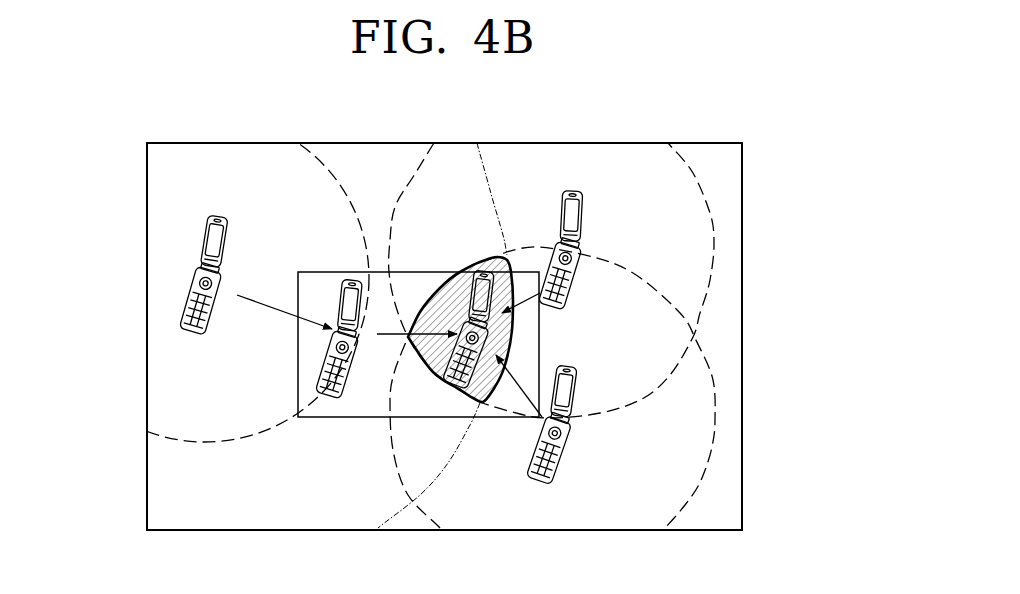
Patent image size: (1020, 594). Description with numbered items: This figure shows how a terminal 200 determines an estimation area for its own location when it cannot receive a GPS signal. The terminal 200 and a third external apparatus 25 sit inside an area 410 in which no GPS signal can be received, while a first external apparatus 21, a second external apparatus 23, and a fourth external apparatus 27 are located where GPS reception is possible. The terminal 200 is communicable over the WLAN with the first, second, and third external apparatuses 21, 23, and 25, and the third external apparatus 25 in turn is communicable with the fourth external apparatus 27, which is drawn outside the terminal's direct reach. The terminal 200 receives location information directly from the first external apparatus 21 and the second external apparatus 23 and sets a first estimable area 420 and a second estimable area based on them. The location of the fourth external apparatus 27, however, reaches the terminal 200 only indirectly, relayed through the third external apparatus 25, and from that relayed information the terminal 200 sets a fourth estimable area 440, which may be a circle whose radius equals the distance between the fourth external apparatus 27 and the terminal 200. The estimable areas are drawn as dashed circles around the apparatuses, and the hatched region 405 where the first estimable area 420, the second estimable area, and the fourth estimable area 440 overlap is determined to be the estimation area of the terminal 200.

The first external apparatus 21 is at (577, 273).
The second external apparatus 23 is at (570, 453).
The third external apparatus 25 is at (332, 278).
The fourth external apparatus 27 is at (200, 245).
The terminal 200 is at (527, 333).
The estimated location region 405 is at (423, 385).
The area in which it is not possible to receive a GPS signal 410 is at (523, 253).
The first estimable area 420 is at (683, 190).
The fourth estimable area 440 is at (428, 195).